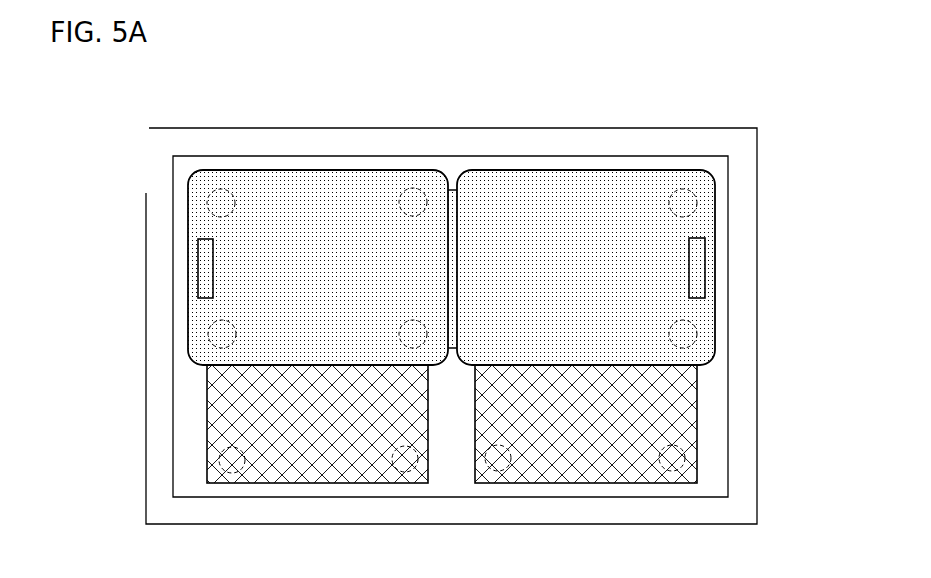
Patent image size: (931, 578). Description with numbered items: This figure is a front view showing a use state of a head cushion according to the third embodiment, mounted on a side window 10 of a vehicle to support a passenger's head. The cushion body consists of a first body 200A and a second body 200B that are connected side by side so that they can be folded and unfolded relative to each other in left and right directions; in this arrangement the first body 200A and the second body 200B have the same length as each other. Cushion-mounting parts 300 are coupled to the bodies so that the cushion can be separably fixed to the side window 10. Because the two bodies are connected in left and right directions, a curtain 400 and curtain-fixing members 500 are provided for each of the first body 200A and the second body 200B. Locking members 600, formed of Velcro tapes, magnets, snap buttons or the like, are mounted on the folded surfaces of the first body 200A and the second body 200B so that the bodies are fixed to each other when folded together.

The side window 10 is at (712, 412).
The first body 200A is at (313, 170).
The second body 200B is at (580, 170).
The cushion-mounting part 300 is at (218, 189).
The curtain 400 is at (318, 484).
The curtain-fixing member 500 is at (232, 473).
The locking member 600 is at (200, 268).